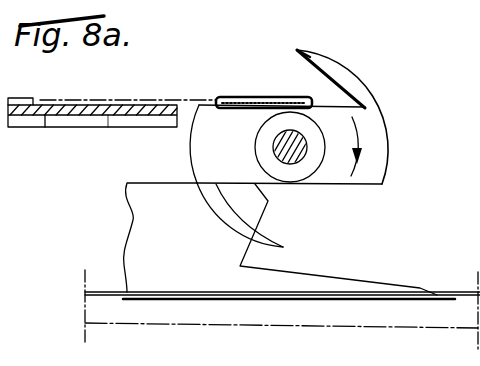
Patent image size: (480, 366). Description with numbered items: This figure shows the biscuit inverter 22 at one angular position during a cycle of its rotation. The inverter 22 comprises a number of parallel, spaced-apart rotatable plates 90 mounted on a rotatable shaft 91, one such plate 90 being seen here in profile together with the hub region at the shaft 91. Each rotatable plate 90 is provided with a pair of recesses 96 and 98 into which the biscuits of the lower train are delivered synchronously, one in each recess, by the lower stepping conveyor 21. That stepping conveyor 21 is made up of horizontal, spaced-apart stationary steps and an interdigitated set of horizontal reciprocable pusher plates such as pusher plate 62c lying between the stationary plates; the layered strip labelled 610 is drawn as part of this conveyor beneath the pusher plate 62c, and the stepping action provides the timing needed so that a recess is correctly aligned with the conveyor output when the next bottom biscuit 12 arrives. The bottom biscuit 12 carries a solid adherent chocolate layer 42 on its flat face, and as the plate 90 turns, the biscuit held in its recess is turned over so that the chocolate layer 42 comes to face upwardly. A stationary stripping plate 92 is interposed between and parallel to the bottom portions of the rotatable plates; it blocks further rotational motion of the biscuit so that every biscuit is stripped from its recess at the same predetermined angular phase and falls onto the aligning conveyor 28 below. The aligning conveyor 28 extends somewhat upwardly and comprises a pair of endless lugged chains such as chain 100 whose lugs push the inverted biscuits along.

The lower stepping conveyor 21 is at (45, 122).
The lower backing layer 610 is at (108, 118).
The reciprocable pusher plate 62c is at (28, 98).
The bottom biscuit 12 is at (266, 83).
The recess 96 is at (297, 50).
The inverter 22 is at (356, 72).
The chocolate layer 42 is at (312, 108).
The rotatable shaft 91 is at (257, 138).
The rotatable plate 90 is at (372, 178).
The recess 98 is at (273, 235).
The stationary stripping plate 92 is at (137, 222).
The endless lugged chain 100 is at (104, 324).
The aligning conveyor 28 is at (208, 318).